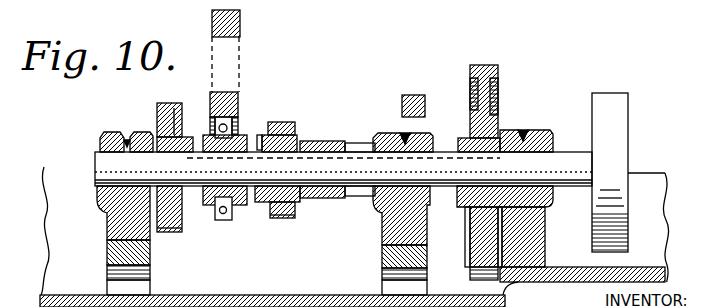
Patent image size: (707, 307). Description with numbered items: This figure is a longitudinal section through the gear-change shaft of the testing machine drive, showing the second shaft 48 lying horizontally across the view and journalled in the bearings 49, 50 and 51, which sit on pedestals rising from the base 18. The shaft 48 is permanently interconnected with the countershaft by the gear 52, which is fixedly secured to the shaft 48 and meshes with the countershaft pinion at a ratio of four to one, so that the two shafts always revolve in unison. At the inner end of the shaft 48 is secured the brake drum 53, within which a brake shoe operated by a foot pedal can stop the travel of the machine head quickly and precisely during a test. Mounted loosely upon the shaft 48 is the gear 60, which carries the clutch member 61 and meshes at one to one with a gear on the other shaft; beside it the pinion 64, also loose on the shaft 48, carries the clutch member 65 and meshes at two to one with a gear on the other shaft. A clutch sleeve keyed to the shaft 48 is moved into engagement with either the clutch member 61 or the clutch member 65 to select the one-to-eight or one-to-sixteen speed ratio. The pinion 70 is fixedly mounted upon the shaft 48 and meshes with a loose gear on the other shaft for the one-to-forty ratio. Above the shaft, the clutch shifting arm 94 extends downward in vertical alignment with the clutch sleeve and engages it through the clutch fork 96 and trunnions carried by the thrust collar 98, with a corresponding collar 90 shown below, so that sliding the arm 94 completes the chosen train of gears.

The base plate 18 is at (307, 300).
The second shaft 48 is at (105, 166).
The bearing 49 is at (112, 132).
The bearing 50 is at (377, 133).
The bearing 51 is at (551, 112).
The gear 52 is at (485, 76).
The brake drum 53 is at (612, 153).
The gear 60 is at (157, 114).
The clutch member 61 is at (183, 104).
The pinion 64 is at (282, 122).
The clutch member 65 is at (260, 134).
The pinion 70 is at (363, 196).
The block 90 is at (410, 88).
The clutch shifting arm 94 is at (240, 15).
The clutch fork 96 is at (214, 92).
The thrust collar 98 is at (232, 212).